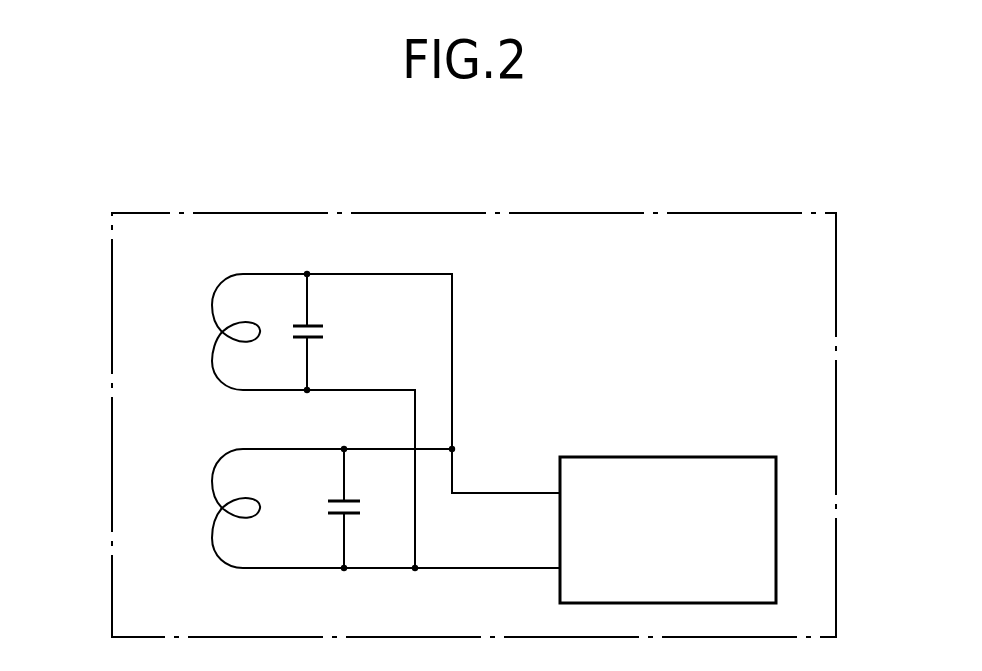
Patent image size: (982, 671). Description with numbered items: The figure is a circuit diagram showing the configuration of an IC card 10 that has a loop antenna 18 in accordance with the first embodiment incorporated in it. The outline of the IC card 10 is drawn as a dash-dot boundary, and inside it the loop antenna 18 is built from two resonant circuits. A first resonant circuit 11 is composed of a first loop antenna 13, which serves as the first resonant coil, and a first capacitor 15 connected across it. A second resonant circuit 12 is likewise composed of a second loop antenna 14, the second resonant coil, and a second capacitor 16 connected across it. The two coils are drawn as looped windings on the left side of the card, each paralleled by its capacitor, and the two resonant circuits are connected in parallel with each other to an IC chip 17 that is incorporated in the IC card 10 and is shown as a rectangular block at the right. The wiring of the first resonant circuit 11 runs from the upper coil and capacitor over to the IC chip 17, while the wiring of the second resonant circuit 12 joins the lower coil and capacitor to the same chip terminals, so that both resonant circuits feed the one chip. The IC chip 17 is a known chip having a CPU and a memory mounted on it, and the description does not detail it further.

The IC card 10 is at (567, 208).
The first resonant circuit 11 is at (466, 315).
The second resonant circuit 12 is at (468, 476).
The first loop antenna 13 is at (212, 303).
The second loop antenna 14 is at (212, 478).
The first capacitor 15 is at (325, 332).
The second capacitor 16 is at (362, 508).
The IC chip 17 is at (694, 456).
The loop antenna 18 is at (301, 407).